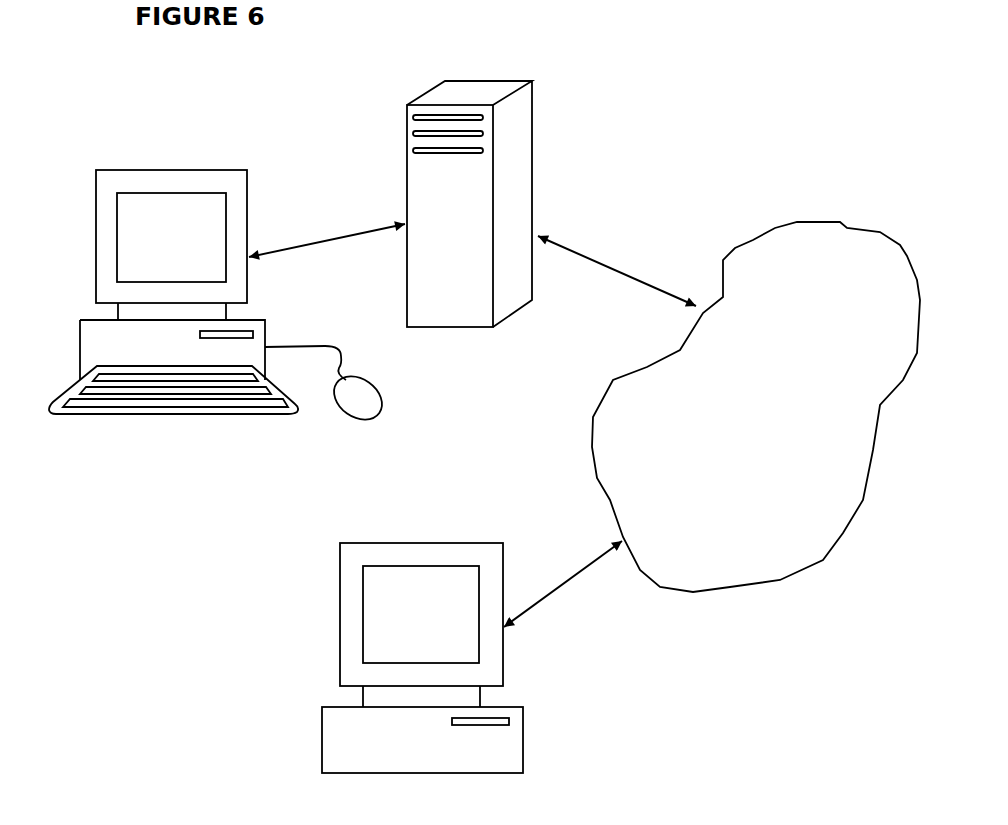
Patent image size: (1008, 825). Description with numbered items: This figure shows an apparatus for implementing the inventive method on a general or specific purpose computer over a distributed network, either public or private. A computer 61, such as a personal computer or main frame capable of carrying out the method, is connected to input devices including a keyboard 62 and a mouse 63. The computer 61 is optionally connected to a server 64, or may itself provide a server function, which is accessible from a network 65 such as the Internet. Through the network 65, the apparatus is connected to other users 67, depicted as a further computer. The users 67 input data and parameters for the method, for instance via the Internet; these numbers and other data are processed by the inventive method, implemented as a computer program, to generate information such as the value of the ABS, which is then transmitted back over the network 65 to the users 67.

The computer 61 is at (165, 163).
The keyboard 62 is at (157, 426).
The mouse 63 is at (382, 395).
The server 64 is at (532, 132).
The network 65 is at (756, 407).
The users 67 is at (510, 695).